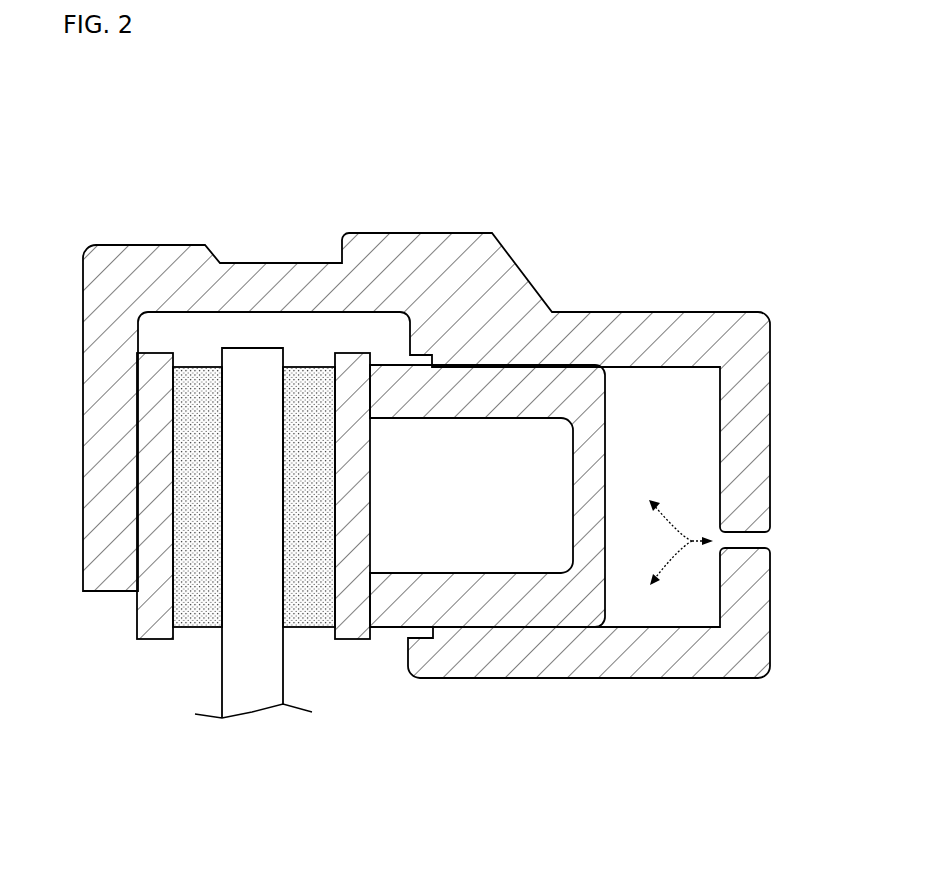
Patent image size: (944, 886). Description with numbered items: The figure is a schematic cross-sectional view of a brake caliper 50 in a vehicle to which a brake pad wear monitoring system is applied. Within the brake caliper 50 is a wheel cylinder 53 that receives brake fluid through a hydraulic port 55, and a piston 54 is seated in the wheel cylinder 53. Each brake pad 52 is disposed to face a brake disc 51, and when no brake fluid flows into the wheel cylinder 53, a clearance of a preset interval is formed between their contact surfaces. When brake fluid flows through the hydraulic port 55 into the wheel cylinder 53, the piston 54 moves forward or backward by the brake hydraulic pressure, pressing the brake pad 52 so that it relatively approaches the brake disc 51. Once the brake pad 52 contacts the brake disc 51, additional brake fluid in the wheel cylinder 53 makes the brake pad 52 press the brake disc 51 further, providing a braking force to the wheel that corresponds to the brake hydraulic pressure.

The brake caliper 50 is at (488, 129).
The brake disc 51 is at (238, 682).
The brake pad 52 is at (197, 375).
The wheel cylinder 53 is at (730, 662).
The piston 54 is at (583, 398).
The hydraulic port 55 is at (767, 538).